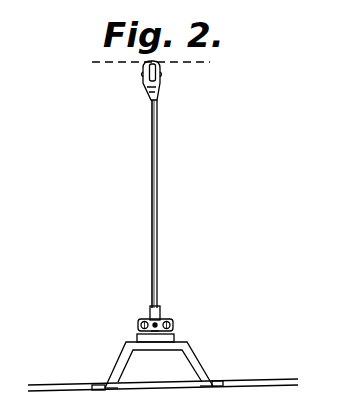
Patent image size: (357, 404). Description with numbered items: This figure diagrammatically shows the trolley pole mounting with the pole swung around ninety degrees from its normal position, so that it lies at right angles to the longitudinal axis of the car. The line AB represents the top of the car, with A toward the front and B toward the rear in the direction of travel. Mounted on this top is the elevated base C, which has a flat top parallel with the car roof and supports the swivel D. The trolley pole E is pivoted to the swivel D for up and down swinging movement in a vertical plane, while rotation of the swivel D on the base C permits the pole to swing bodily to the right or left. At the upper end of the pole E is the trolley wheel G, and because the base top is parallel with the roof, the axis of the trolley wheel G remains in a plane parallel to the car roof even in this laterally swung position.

The trolley wheel G is at (160, 78).
The trolley pole E is at (156, 208).
The swivel D is at (150, 336).
The elevated base C is at (190, 341).
The front end of line AB representing car top A is at (153, 387).
The rear end of line AB representing car top B is at (262, 384).